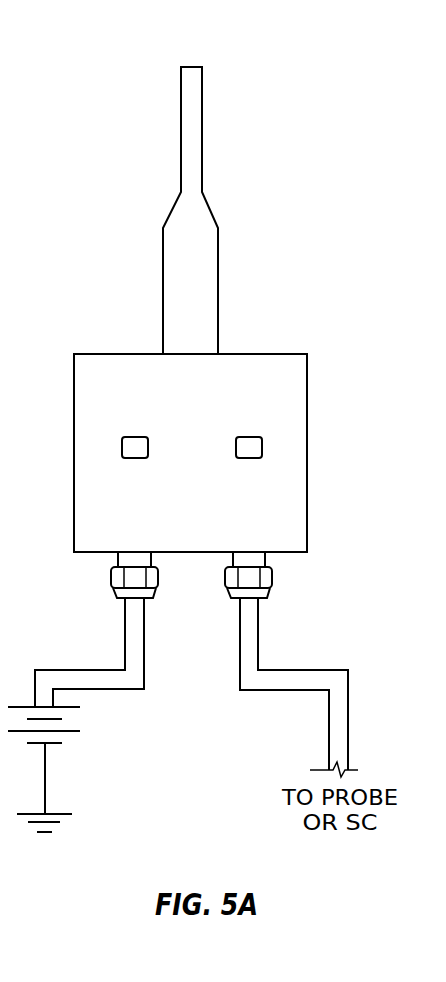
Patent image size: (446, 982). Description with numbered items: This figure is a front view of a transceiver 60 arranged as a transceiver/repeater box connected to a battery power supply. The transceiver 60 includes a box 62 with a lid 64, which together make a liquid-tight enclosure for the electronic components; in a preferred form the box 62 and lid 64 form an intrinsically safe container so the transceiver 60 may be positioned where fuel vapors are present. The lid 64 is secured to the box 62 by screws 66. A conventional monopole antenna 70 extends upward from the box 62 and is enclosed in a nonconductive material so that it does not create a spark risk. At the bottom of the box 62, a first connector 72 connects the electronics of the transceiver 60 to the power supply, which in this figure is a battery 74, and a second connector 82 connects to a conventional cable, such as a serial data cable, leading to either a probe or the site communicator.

The transceiver 60 is at (380, 47).
The monopole antenna 70 is at (202, 110).
The box 62 is at (332, 439).
The lid 64 is at (203, 413).
The screws 66 is at (236, 447).
The first connector 72 is at (155, 596).
The second connector 82 is at (272, 593).
The battery 74 is at (55, 745).